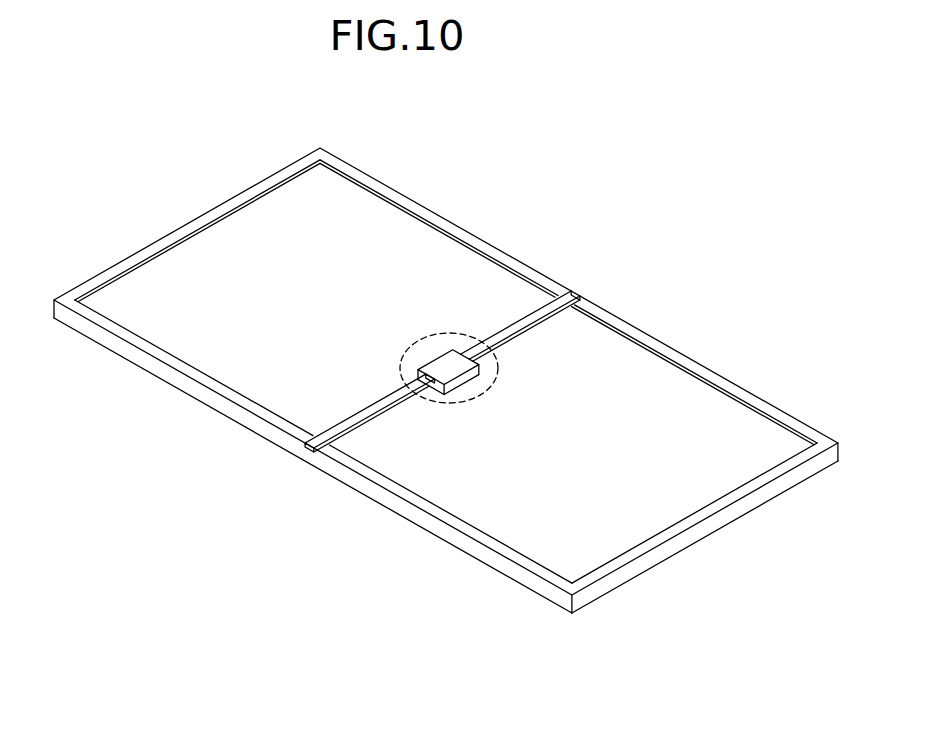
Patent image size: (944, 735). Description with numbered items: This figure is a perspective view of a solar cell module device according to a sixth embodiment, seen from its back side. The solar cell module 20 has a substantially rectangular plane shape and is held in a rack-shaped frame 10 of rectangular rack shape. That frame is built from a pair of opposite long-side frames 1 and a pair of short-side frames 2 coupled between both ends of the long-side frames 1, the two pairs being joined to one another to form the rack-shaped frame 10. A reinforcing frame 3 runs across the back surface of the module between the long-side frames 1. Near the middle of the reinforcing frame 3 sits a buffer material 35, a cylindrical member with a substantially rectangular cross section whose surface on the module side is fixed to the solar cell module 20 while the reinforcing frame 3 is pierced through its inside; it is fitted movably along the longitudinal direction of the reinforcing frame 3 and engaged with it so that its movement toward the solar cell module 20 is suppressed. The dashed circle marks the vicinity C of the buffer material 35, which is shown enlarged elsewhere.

The rack-shaped frame 10 is at (387, 188).
The long-side frame 1 is at (468, 227).
The short-side frame 2 is at (190, 222).
The reinforcing frame 3 is at (548, 312).
The buffer material 35 is at (471, 378).
The solar cell module 20 is at (593, 561).
The vicinity of buffer material C is at (449, 359).